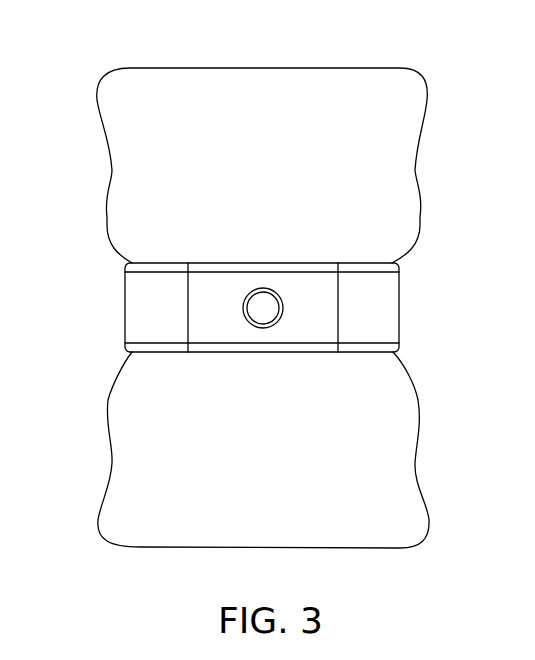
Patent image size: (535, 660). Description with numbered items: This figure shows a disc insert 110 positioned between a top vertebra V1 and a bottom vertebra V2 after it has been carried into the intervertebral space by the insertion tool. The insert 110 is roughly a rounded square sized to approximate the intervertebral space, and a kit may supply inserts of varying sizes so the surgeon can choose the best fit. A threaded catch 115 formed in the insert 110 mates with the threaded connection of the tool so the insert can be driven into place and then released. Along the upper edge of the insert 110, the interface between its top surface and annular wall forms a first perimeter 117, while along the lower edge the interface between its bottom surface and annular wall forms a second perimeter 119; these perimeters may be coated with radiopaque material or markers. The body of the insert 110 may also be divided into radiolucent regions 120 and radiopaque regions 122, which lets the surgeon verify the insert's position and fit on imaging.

The top vertebra V1 is at (266, 143).
The bottom vertebra V2 is at (367, 458).
The insert 110 is at (212, 293).
The threaded catch 115 is at (250, 293).
The first perimeter 117 is at (125, 268).
The second perimeter 119 is at (127, 348).
The radiolucent regions 120 is at (212, 287).
The radiopaque regions 122 is at (365, 287).